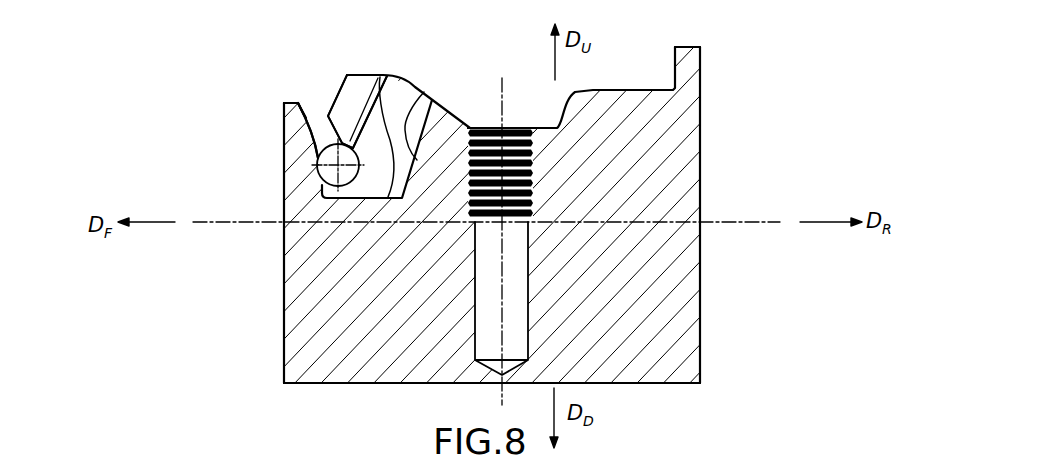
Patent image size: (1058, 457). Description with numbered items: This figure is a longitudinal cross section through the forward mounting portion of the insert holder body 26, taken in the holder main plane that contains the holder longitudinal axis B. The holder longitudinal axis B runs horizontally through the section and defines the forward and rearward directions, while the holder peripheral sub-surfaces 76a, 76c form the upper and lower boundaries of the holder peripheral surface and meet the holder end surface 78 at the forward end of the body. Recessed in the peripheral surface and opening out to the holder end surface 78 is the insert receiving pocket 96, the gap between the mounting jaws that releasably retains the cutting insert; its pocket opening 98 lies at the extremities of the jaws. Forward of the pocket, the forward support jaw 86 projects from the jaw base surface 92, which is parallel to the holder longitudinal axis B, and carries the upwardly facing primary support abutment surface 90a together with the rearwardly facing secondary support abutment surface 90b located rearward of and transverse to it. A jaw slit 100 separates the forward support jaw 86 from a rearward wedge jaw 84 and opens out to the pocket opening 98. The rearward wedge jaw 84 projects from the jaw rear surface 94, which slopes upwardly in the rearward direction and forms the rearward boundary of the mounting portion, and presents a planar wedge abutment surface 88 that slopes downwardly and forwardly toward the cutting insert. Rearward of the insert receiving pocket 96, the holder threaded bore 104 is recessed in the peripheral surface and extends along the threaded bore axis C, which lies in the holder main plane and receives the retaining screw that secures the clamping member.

The insert holder body 26 is at (236, 91).
The holder end surface 78 is at (284, 312).
The holder peripheral sub-surface 76a is at (690, 47).
The holder peripheral sub-surface 76c is at (648, 385).
The rearward wedge jaw 84 is at (365, 68).
The forward support jaw 86 is at (275, 106).
The wedge abutment surface 88 is at (357, 90).
The primary support abutment surface 90a is at (284, 103).
The secondary support abutment surface 90b is at (302, 118).
The jaw base surface 92 is at (367, 140).
The jaw rear surface 94 is at (424, 92).
The insert receiving pocket 96 is at (311, 103).
The pocket opening 98 is at (371, 140).
The jaw slit 100 is at (306, 129).
The holder threaded bore 104 is at (487, 128).
The holder longitudinal axis B is at (762, 220).
The threaded bore axis C is at (502, 87).